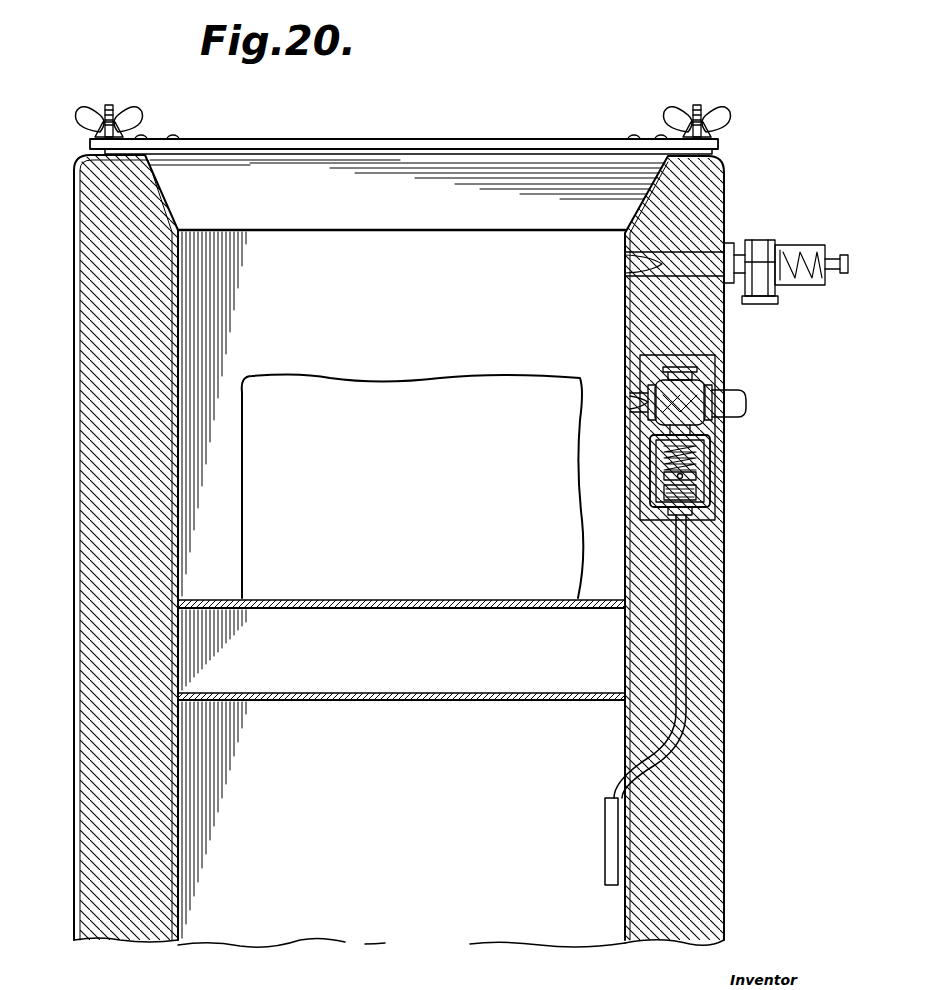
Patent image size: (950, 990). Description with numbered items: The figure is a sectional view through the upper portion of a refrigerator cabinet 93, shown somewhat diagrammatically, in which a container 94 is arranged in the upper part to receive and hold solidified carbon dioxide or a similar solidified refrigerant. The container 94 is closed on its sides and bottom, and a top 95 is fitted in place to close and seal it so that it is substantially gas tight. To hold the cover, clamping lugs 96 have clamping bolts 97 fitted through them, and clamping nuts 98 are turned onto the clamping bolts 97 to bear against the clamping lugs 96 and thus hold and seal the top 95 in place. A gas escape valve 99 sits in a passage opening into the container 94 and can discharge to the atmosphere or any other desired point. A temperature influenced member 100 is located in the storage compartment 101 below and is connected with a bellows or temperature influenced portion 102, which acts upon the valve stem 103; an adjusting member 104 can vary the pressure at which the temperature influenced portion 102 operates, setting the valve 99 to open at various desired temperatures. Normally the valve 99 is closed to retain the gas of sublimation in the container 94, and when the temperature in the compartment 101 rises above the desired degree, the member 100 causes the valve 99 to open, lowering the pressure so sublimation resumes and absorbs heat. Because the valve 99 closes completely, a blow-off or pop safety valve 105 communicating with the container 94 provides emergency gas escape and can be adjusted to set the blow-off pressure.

The cabinet 93 is at (704, 641).
The container 94 is at (413, 441).
The top 95 is at (422, 172).
The clamping lugs 96 is at (720, 145).
The clamping bolts 97 is at (697, 112).
The clamping nuts 98 is at (722, 124).
The gas escape valve 99 is at (690, 392).
The temperature influenced member 100 is at (608, 826).
The storage compartment 101 is at (345, 925).
The bellows or temperature influenced portion 102 is at (710, 504).
The valve stem 103 is at (700, 455).
The adjusting member or mechanism 104 is at (698, 478).
The blow-off or safety valve 105 is at (762, 253).